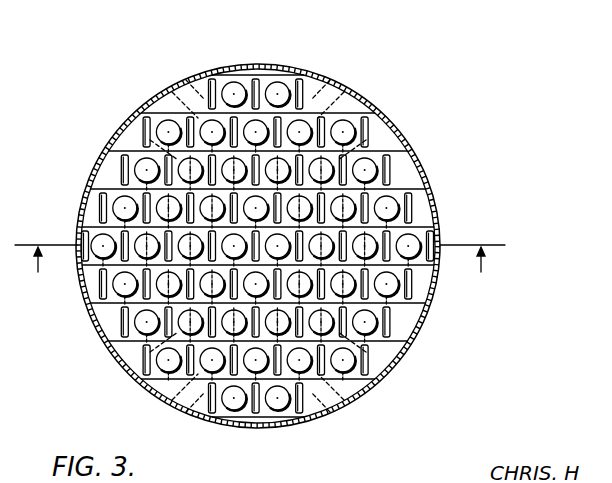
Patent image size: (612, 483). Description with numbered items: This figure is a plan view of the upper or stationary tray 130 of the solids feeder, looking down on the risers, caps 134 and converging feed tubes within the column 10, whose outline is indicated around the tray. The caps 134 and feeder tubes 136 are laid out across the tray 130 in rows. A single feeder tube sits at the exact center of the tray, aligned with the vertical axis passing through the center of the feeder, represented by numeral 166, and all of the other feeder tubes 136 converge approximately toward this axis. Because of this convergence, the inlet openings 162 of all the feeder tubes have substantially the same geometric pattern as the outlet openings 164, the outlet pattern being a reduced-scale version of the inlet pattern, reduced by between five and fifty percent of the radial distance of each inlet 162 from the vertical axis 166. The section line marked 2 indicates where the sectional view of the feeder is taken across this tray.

The column 10 is at (368, 99).
The upper tray 130 is at (408, 183).
The caps 134 is at (344, 118).
The feeder tubes 136 is at (263, 78).
The inlet openings 162 is at (393, 153).
The outlet openings 164 is at (135, 163).
The vertical axis of the feeder 166 is at (237, 248).
The section line 2- 2 is at (260, 248).